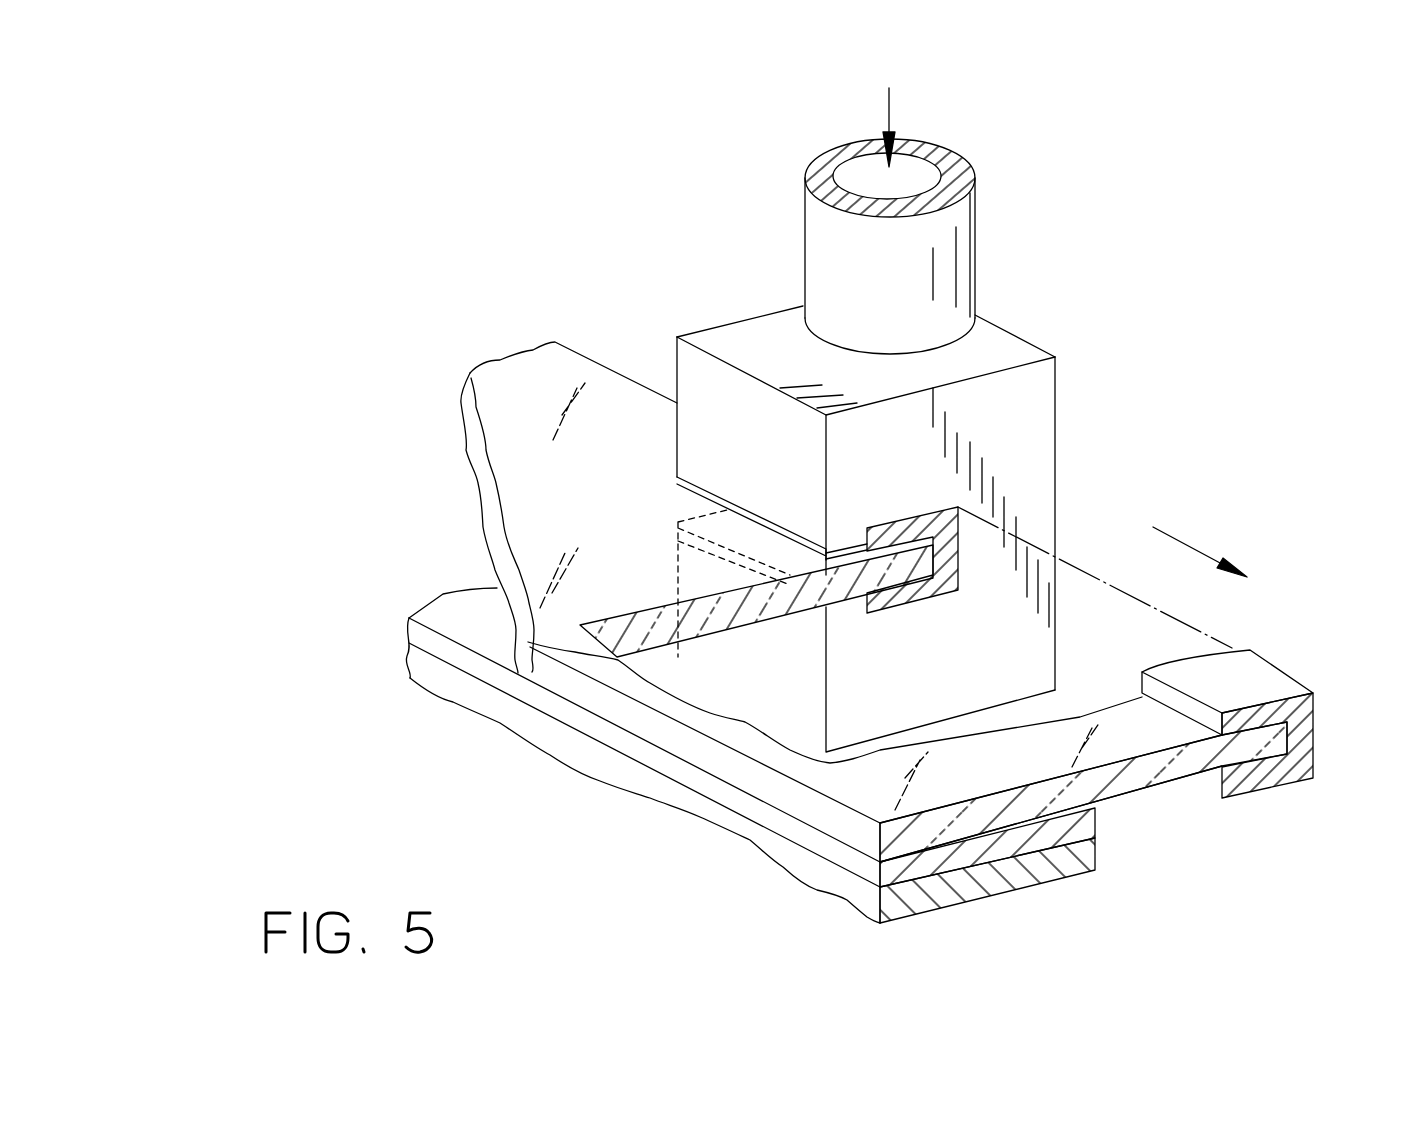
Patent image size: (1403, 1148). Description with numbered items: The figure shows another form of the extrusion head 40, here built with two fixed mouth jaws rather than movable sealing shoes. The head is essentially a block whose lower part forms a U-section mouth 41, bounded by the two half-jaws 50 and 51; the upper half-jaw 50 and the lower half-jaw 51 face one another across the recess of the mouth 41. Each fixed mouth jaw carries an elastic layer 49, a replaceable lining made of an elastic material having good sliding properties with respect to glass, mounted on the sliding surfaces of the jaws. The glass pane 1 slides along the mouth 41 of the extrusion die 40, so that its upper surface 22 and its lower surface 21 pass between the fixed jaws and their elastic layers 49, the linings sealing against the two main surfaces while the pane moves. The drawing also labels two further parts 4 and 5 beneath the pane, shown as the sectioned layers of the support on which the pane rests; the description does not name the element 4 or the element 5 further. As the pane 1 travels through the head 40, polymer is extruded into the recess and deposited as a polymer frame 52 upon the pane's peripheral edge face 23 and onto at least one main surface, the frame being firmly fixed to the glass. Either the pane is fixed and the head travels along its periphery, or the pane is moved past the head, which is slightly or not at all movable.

The pane 1 is at (1140, 796).
The lower base layer 4 is at (993, 873).
The upper base layer 5 is at (1072, 827).
The lower surface 21 is at (1182, 787).
The upper surface 22 is at (1113, 713).
The peripheral edge face 23 is at (1318, 738).
The extrusion head 40 is at (1045, 421).
The mouth 41 is at (672, 506).
The elastic layer 49 is at (745, 507).
The half-jaw 50 is at (874, 453).
The half-jaw 51 is at (875, 725).
The polymer frame 52 is at (1240, 672).